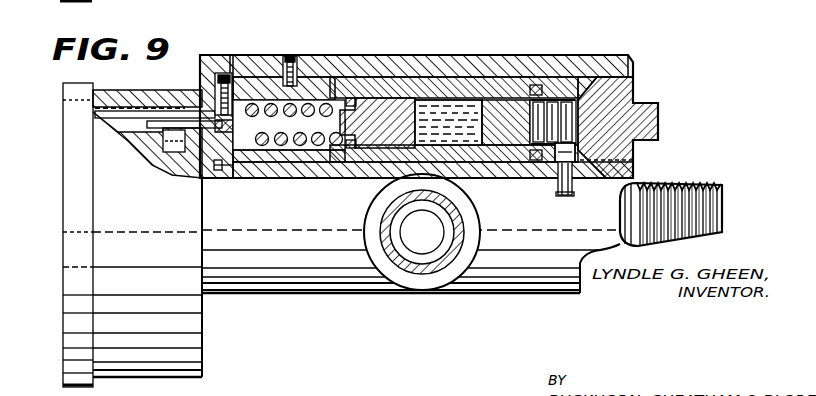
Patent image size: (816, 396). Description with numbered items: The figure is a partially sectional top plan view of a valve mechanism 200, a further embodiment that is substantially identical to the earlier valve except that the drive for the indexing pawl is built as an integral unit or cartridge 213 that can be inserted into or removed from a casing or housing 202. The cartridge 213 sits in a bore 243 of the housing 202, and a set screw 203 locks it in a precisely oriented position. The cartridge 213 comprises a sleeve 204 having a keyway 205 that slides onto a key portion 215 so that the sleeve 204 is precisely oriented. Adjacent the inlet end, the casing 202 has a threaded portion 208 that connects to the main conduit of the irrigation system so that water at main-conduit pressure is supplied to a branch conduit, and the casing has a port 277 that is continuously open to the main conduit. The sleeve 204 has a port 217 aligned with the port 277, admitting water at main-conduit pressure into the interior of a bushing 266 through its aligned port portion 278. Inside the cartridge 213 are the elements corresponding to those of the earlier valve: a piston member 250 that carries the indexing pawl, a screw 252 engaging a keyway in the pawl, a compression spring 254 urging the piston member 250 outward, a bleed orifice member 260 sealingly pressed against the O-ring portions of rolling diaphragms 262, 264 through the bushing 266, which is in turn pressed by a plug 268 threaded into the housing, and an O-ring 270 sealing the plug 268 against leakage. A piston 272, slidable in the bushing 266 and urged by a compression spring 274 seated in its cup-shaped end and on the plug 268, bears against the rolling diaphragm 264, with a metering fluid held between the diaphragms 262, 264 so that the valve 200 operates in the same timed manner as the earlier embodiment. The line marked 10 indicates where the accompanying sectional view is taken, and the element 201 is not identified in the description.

The section line 10- 10 is at (228, 83).
The valve mechanism 200 is at (347, 300).
The actuating rod 201 is at (185, 95).
The casing or housing 202 is at (452, 58).
The set screw 203 is at (286, 55).
The sleeve 204 is at (330, 180).
The keyway 205 is at (233, 182).
The threaded portion 208 is at (722, 190).
The cartridge 213 is at (350, 85).
The key portion 215 is at (202, 183).
The port 217 is at (555, 196).
The bore 243 is at (470, 75).
The piston member 250 is at (342, 100).
The screw 252 is at (223, 74).
The compression spring 254 is at (288, 78).
The bleed orifice member 260 is at (440, 62).
The rolling diaphragm 262 is at (382, 166).
The rolling diaphragm 264 is at (460, 165).
The bushing 266 is at (565, 95).
The plug 268 is at (622, 95).
The O-ring 270 is at (633, 160).
The piston 272 is at (508, 108).
The compression spring 274 is at (585, 85).
The port 277 is at (566, 200).
The port portion 278 is at (633, 144).